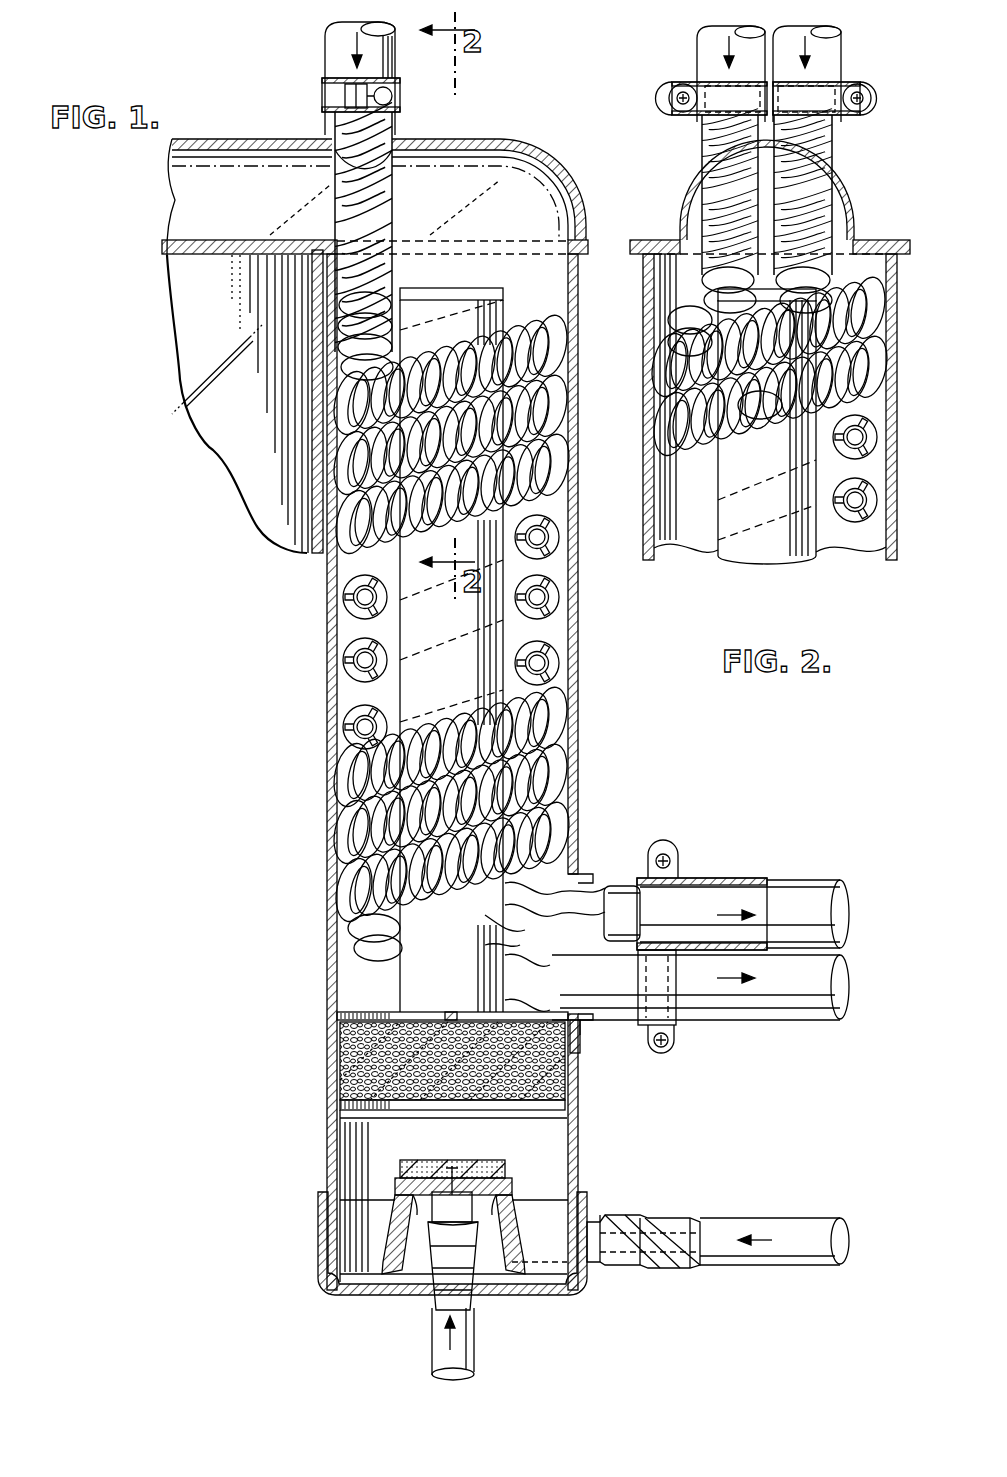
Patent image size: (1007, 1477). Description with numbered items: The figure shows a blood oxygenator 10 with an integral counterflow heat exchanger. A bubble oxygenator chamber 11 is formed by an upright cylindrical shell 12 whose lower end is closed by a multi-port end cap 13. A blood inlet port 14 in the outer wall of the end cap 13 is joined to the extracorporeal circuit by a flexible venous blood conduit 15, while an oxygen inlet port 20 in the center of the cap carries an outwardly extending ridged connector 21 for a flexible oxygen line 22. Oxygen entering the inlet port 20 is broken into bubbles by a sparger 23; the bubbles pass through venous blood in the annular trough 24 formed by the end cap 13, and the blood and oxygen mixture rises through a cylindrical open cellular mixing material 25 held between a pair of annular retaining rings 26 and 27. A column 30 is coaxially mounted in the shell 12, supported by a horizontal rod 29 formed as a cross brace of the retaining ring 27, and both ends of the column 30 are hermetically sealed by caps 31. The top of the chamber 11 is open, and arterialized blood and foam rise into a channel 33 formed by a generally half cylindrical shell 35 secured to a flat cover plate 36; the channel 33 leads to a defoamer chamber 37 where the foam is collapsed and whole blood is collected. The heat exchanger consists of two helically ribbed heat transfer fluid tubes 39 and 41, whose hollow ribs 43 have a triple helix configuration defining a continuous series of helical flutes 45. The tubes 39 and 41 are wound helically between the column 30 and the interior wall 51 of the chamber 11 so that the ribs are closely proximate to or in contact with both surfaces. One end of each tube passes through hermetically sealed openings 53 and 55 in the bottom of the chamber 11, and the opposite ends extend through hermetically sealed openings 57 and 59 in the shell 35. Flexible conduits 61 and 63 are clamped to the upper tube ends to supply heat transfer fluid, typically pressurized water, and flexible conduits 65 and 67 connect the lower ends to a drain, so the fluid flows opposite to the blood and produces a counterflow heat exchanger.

In FIG. 1, the blood oxygenator 10 is at (427, 772).
In FIG. 1, the bubble oxygenator chamber 11 is at (580, 699).
In FIG. 1, the cylindrical shell 12 is at (578, 760).
In FIG. 2, the cylindrical shell 12 is at (648, 345).
In FIG. 1, the multi-port end cap 13 is at (578, 1292).
In FIG. 1, the blood inlet port 14 is at (645, 1230).
In FIG. 1, the flexible venous blood conduit 15 is at (768, 1224).
In FIG. 1, the oxygen inlet port 20 is at (452, 1160).
In FIG. 1, the ridged connector 21 is at (462, 1272).
In FIG. 1, the flexible oxygen line 22 is at (432, 1315).
In FIG. 1, the sparger 23 is at (500, 1180).
In FIG. 1, the annular trough 24 is at (548, 1255).
In FIG. 1, the open cellular mixing material 25 is at (340, 1058).
In FIG. 1, the annular retaining ring 26 is at (578, 1128).
In FIG. 1, the annular retaining ring 27 is at (337, 990).
In FIG. 1, the horizontal rod 29 is at (445, 1012).
In FIG. 1, the column 30 is at (472, 636).
In FIG. 2, the column 30 is at (750, 556).
In FIG. 1, the caps 31 is at (495, 291).
In FIG. 1, the channel 33 is at (451, 205).
In FIG. 1, the half cylindrical shell 35 is at (376, 178).
In FIG. 2, the half cylindrical shell 35 is at (845, 176).
In FIG. 1, the flat cover plate 36 is at (586, 240).
In FIG. 2, the flat cover plate 36 is at (858, 240).
In FIG. 1, the defoamer chamber 37 is at (225, 452).
In FIG. 1, the helically ribbed heat transfer fluid tube 39 is at (392, 128).
In FIG. 2, the helically ribbed heat transfer fluid tube 39 is at (702, 138).
In FIG. 2, the helically ribbed heat transfer fluid tube 41 is at (835, 138).
In FIG. 1, the hollow ribs 43 is at (340, 578).
In FIG. 1, the helical flutes 45 is at (345, 655).
In FIG. 1, the interior wall 51 is at (578, 640).
In FIG. 1, the hermetically sealed opening 53 is at (602, 885).
In FIG. 1, the hermetically sealed opening 55 is at (590, 1018).
In FIG. 1, the hermetically sealed opening 57 is at (334, 150).
In FIG. 2, the hermetically sealed opening 57 is at (705, 148).
In FIG. 2, the hermetically sealed opening 59 is at (833, 150).
In FIG. 1, the flexible conduit 61 is at (327, 42).
In FIG. 2, the flexible conduit 61 is at (697, 52).
In FIG. 2, the flexible conduit 63 is at (841, 58).
In FIG. 1, the flexible conduit 65 is at (724, 889).
In FIG. 1, the flexible conduit 67 is at (700, 1018).